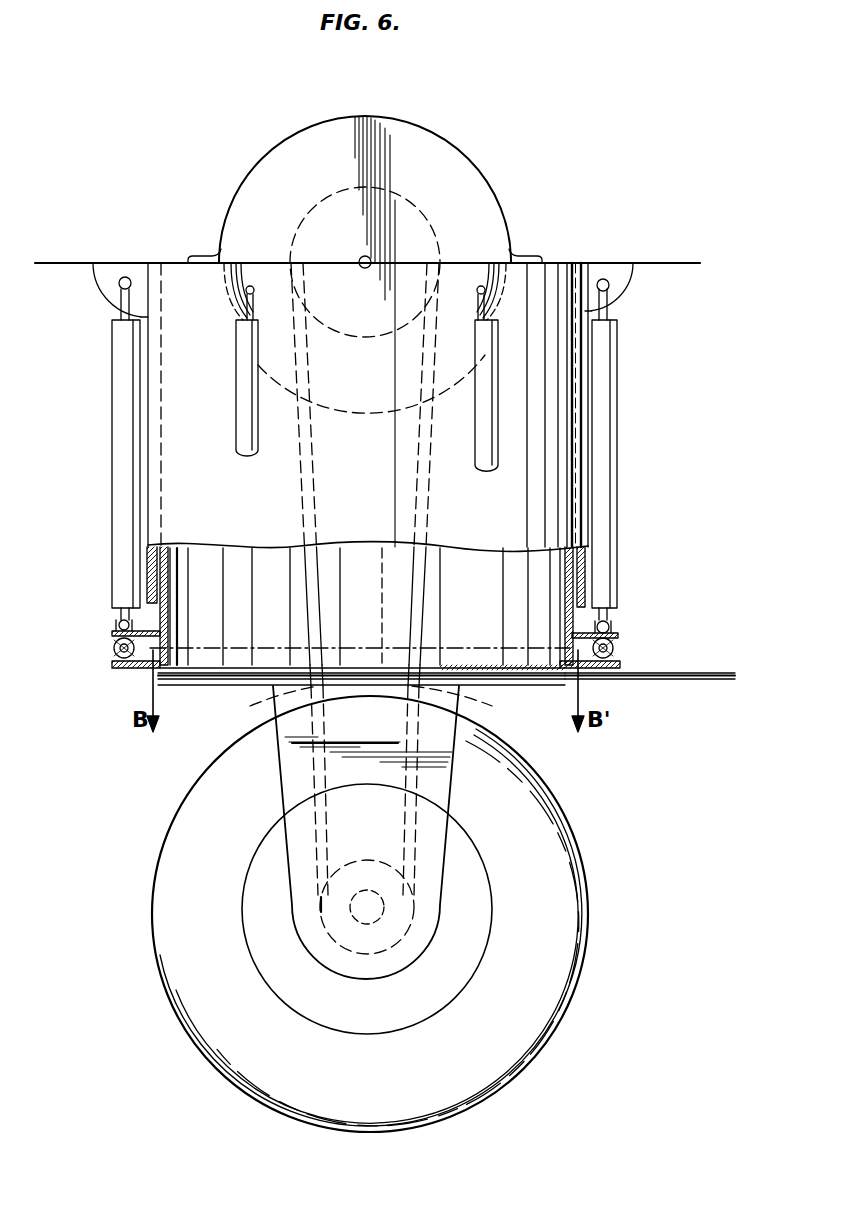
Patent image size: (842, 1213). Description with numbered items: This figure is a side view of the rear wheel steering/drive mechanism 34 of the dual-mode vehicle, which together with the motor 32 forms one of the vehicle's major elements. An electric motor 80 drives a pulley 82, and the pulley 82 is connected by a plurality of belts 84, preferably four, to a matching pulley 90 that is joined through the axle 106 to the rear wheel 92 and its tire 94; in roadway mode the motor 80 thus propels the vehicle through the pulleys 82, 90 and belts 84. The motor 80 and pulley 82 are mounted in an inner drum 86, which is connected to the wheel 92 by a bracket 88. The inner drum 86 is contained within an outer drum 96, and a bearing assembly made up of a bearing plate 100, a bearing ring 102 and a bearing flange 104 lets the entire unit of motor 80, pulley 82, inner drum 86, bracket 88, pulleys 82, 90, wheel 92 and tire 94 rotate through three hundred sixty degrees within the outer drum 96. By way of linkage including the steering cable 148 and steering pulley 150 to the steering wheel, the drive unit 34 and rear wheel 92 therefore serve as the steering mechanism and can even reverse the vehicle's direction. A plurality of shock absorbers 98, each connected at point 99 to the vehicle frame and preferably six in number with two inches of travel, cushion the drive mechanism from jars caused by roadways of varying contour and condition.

The motor 32 is at (518, 125).
The steering/drive mechanism 34 is at (131, 183).
The electric motor 80 is at (423, 132).
The pulley 82 is at (432, 214).
The belts 84 is at (319, 597).
The inner drum 86 is at (160, 623).
The bracket 88 is at (277, 770).
The matching pulley 90 is at (321, 905).
The rear wheel 92 is at (485, 908).
The tire 94 is at (522, 1044).
The outer drum 96 is at (148, 450).
The shock absorber 98 is at (118, 378).
The connection point 99 is at (118, 284).
The bearing plate 100 is at (611, 633).
The bearing ring 102 is at (616, 650).
The bearing flange 104 is at (603, 684).
The axle 106 is at (362, 921).
The steering cable 148 is at (705, 672).
The steering pulley 150 is at (221, 689).